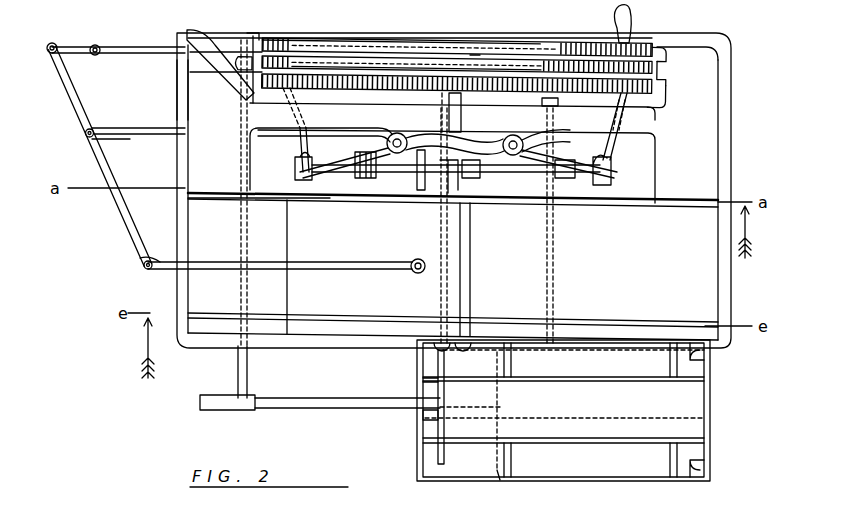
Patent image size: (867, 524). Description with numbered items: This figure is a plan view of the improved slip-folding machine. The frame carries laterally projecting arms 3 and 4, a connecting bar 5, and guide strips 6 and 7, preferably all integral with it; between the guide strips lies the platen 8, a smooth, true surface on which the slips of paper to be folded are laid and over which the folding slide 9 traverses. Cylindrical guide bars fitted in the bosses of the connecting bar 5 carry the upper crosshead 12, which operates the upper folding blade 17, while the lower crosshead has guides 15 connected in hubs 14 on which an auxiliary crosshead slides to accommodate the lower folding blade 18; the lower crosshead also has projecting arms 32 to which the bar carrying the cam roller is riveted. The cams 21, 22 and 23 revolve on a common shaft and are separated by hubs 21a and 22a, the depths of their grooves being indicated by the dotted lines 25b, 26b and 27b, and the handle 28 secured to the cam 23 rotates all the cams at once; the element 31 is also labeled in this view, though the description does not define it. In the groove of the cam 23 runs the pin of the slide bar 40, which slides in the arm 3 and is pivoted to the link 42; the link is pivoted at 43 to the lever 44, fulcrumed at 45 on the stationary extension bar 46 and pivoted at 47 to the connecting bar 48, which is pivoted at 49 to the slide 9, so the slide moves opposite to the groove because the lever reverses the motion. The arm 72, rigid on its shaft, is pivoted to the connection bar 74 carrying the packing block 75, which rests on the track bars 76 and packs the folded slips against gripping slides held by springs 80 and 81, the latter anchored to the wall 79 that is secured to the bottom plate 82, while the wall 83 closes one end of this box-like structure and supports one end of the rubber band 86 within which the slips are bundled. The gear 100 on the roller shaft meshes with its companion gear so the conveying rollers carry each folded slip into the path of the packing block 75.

The laterally projecting arm 3 is at (195, 82).
The laterally projecting arm 4 is at (703, 115).
The connecting bar 5 is at (545, 80).
The guide strip 6 is at (185, 200).
The guide strip 7 is at (222, 338).
The platen 8 is at (195, 286).
The folding slide 9 is at (380, 316).
The upper crosshead 12 is at (452, 132).
The hub 14 is at (300, 176).
The guide 15 is at (335, 178).
The upper folding blade 17 is at (447, 165).
The lower folding blade 18 is at (332, 335).
The cam 21 is at (652, 97).
The hub 21a is at (470, 78).
The cam 22 is at (660, 68).
The hub 22a is at (470, 62).
The cam 23 is at (652, 52).
The dotted line 25b is at (256, 95).
The dotted line 26b is at (325, 68).
The dotted line 27b is at (400, 48).
The handle 28 is at (632, 16).
The ratchet bar 31 is at (500, 95).
The projecting arm 32 is at (250, 90).
The slide bar 40 is at (127, 47).
The link 42 is at (78, 44).
The pivot 43 is at (56, 56).
The lever 44 is at (125, 134).
The fulcrum 45 is at (86, 133).
The stationary extension bar 46 is at (125, 145).
The pivot 47 is at (140, 262).
The connecting bar 48 is at (200, 265).
The pivot 49 is at (414, 259).
The arm 72 is at (205, 390).
The connection bar 74 is at (280, 410).
The packing block 75 is at (436, 386).
The track bar 76 is at (692, 448).
The wall 79 is at (553, 482).
The spring 80 is at (667, 358).
The spring 81 is at (662, 462).
The bottom plate 82 is at (492, 480).
The wall 83 is at (438, 470).
The rubber band 86 is at (436, 420).
The gear 100 is at (345, 64).